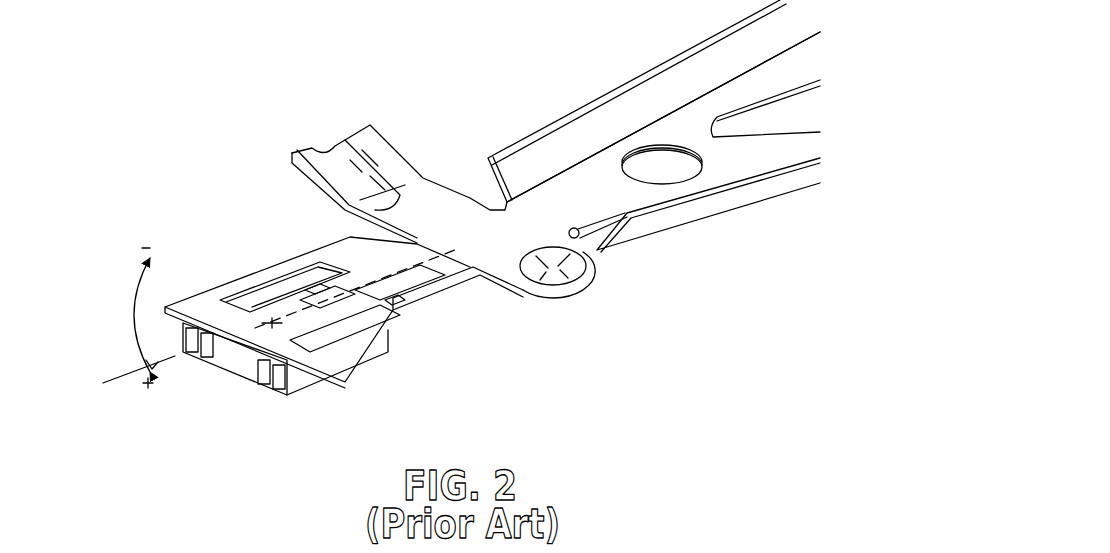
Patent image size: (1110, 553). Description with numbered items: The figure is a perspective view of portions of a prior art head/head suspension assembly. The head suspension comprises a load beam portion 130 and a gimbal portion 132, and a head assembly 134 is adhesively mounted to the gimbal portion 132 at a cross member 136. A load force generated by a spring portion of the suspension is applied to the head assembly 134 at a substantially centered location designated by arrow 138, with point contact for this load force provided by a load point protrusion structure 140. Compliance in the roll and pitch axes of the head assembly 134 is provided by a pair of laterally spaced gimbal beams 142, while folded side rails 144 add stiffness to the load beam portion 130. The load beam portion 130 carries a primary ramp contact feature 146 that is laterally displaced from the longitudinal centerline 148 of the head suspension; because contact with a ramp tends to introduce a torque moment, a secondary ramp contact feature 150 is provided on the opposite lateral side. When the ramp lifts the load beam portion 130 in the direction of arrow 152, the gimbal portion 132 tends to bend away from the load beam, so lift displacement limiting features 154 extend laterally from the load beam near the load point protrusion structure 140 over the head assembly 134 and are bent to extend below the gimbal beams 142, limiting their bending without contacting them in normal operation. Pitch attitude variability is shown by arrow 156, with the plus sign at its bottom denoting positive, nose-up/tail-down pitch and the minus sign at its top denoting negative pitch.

The load beam portion 130 is at (505, 95).
The gimbal portion 132 is at (187, 205).
The head assembly 134 is at (222, 390).
The cross member 136 is at (270, 337).
The arrow 138 is at (320, 297).
The load point protrusion structure 140 is at (322, 300).
The gimbal beams 142 is at (265, 275).
The folded side rails 144 is at (640, 103).
The primary ramp contact feature 146 is at (342, 170).
The longitudinal centerline 148 is at (440, 257).
The secondary ramp contact feature 150 is at (555, 275).
The arrow 152 is at (268, 108).
The lift displacement limiting feature 154 is at (395, 307).
The arrow 156 is at (133, 315).